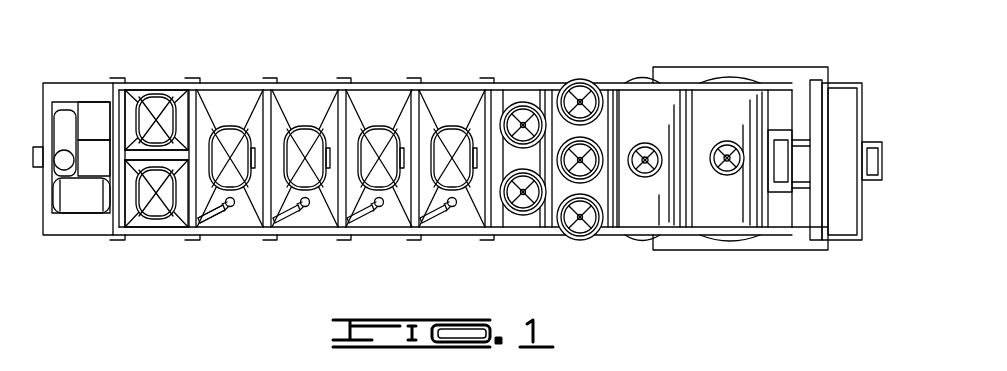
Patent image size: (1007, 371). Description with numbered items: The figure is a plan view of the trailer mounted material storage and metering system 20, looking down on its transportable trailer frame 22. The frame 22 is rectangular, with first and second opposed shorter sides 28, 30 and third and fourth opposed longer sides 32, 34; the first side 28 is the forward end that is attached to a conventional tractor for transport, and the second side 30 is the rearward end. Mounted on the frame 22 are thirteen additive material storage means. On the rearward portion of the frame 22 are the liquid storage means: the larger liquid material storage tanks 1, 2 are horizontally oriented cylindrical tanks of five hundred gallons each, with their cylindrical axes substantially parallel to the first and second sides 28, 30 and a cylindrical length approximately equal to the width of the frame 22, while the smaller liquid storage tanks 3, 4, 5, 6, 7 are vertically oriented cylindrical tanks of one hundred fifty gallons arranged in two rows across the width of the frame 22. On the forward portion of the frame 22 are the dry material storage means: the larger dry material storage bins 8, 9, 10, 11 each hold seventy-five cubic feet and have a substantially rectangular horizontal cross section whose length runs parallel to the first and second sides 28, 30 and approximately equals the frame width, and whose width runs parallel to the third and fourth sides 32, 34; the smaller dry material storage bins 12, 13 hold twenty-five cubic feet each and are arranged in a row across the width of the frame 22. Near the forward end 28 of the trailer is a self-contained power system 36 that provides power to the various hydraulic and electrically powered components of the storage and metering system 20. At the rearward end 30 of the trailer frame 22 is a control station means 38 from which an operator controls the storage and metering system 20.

The larger liquid material storage tank 1 is at (731, 95).
The larger liquid material storage tank 2 is at (640, 95).
The smaller liquid storage tank 3 is at (571, 98).
The smaller liquid storage tank 4 is at (592, 158).
The smaller liquid storage tank 5 is at (580, 230).
The smaller liquid storage tank 6 is at (523, 112).
The smaller liquid storage tank 7 is at (523, 205).
The larger dry material storage bin 8 is at (438, 100).
The larger dry material storage bin 9 is at (375, 100).
The larger dry material storage bin 10 is at (300, 100).
The larger dry material storage bin 11 is at (228, 100).
The smaller dry material storage bin 12 is at (158, 105).
The smaller dry material storage bin 13 is at (157, 215).
The material metering and storage system 20 is at (680, 56).
The trailer frame 22 is at (142, 83).
The first side 28 is at (40, 86).
The second side 30 is at (829, 246).
The third side 32 is at (472, 83).
The fourth side 34 is at (444, 237).
The self-contained power system 36 is at (92, 102).
The control station means 38 is at (797, 139).